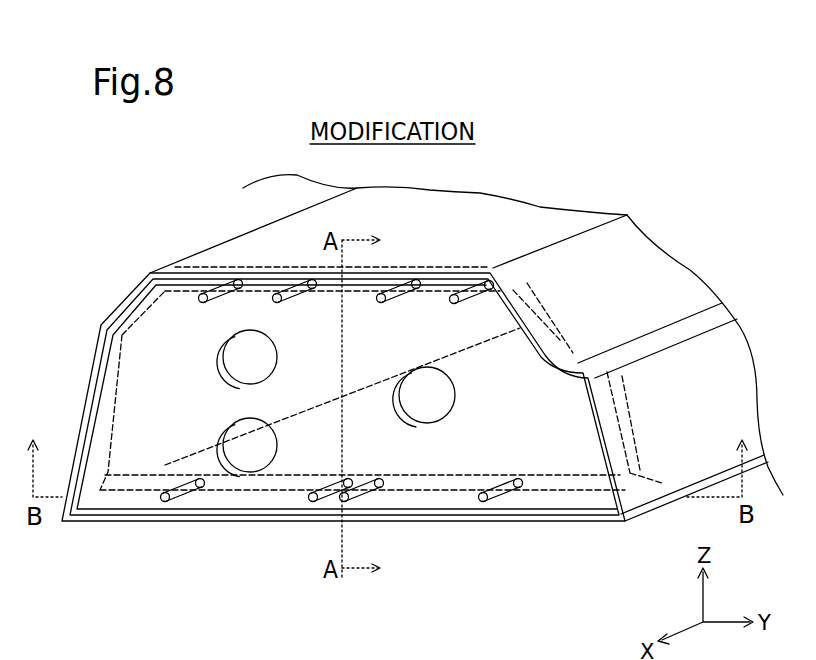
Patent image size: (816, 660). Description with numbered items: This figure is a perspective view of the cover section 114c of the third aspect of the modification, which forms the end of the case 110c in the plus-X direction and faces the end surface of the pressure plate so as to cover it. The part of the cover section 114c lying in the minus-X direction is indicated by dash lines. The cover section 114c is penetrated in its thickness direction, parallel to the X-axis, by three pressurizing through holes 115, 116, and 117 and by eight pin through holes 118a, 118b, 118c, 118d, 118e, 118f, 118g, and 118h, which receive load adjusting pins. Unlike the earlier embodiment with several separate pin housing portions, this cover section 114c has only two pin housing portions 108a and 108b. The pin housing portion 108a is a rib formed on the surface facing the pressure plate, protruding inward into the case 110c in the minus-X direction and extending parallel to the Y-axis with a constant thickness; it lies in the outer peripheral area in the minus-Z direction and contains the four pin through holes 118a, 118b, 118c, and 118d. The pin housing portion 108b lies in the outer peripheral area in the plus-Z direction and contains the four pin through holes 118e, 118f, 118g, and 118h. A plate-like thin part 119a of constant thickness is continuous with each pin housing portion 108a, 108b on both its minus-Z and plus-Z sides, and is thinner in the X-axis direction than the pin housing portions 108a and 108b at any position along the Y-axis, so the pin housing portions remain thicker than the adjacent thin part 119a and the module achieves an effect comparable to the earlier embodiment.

The case 110c is at (138, 247).
The cover section 114c is at (160, 363).
The pressurizing through hole 115 is at (283, 362).
The pressurizing through hole 116 is at (275, 466).
The pressurizing through hole 117 is at (450, 410).
The pin through hole 118a is at (165, 503).
The pin through hole 118b is at (312, 502).
The pin through hole 118c is at (348, 502).
The pin through hole 118d is at (484, 503).
The pin through hole 118e is at (205, 292).
The pin through hole 118f is at (278, 292).
The pin through hole 118g is at (388, 294).
The pin through hole 118h is at (460, 294).
The thin part 119a is at (527, 263).
The pin housing portion 108a is at (538, 478).
The pin housing portion 108b is at (540, 289).